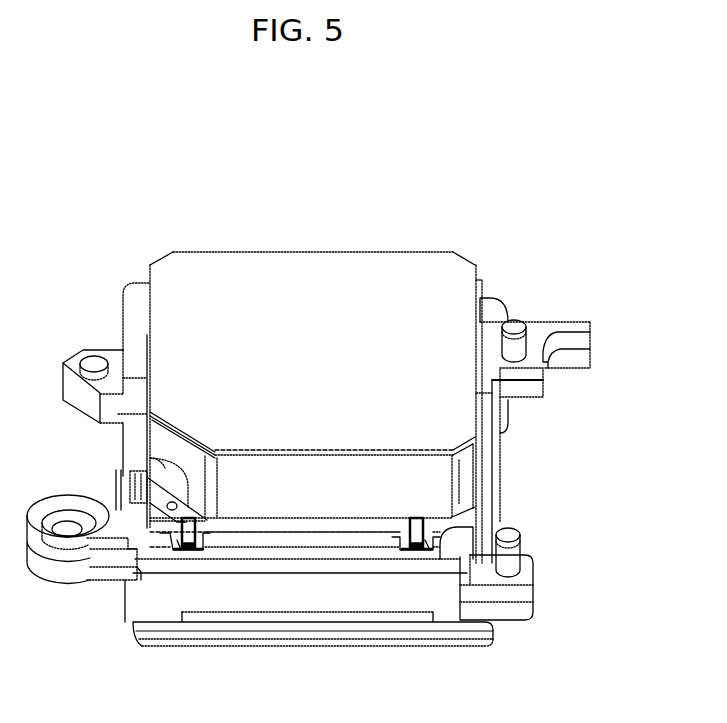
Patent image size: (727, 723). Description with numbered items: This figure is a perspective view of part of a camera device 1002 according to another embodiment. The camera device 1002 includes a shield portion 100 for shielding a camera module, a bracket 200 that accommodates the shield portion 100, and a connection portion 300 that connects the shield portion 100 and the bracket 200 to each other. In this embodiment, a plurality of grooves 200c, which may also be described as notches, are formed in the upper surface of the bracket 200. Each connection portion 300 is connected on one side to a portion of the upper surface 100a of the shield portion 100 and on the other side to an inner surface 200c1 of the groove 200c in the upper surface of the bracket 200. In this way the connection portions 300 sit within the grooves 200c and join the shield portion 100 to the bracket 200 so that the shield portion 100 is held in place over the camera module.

The camera device 1002 is at (409, 222).
The shield portion 100 is at (228, 262).
The upper surface of the shield portion 100a is at (150, 458).
The bracket 200 is at (150, 602).
The groove 200c is at (178, 553).
The inner surface of the groove 200c1 is at (200, 556).
The connection portion 300 is at (186, 553).